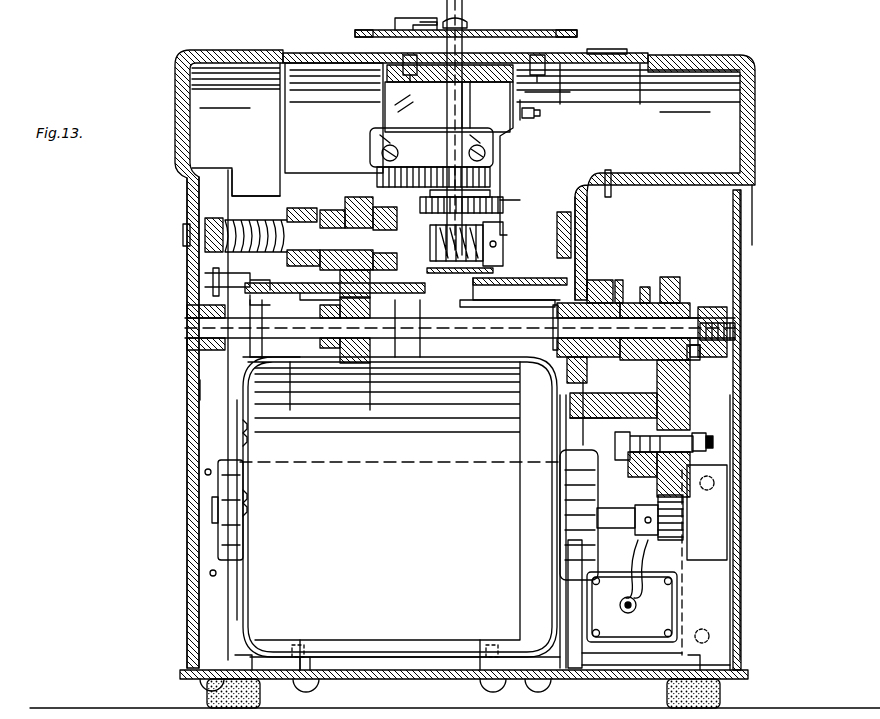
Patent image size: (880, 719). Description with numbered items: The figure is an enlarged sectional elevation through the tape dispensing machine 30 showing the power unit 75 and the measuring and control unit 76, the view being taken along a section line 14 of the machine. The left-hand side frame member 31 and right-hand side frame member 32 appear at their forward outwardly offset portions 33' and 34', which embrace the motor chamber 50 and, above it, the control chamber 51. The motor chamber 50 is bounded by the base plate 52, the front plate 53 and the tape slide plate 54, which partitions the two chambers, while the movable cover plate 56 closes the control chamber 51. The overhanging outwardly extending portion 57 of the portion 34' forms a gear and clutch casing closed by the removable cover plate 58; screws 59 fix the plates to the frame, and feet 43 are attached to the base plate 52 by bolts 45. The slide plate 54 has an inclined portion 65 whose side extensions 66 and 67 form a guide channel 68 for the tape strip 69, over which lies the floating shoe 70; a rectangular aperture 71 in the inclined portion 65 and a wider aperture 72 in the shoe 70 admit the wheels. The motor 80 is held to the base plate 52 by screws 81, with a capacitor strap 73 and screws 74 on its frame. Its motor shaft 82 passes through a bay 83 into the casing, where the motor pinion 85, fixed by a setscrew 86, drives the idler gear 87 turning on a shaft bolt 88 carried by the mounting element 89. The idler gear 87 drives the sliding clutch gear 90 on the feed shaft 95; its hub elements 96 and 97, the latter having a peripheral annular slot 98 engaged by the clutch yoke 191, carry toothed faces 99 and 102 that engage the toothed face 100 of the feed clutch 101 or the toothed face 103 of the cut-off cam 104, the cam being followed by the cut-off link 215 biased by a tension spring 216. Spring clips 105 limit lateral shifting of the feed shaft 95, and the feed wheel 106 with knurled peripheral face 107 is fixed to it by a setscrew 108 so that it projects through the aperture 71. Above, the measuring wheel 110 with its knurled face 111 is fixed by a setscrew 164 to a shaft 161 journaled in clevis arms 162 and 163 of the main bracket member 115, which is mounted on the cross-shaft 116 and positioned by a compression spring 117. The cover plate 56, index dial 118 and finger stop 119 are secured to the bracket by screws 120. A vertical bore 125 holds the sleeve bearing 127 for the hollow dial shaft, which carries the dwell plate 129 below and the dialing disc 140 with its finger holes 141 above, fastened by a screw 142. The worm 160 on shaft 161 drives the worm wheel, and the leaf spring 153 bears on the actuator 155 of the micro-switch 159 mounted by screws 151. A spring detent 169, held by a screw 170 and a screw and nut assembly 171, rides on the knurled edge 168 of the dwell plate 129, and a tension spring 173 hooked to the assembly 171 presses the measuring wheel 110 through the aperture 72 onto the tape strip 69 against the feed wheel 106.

The tape dispensing machine 30 is at (117, 429).
The left-hand side frame member 31 is at (177, 47).
The right-hand side frame member 32 is at (725, 53).
The forward outwardly offset portion 33' is at (158, 369).
The forward outwardly offset portion 34' is at (517, 372).
The foot 43 is at (262, 692).
The bolt 45 is at (248, 652).
The motor chamber 50 is at (226, 600).
The control chamber 51 is at (255, 182).
The base plate 52 is at (410, 680).
The front plate 53 is at (240, 622).
The tape slide plate 54 is at (470, 306).
The movable cover plate 56 is at (292, 52).
The overhanging outwardly extending portion 57 is at (740, 232).
The removable cover plate 58 is at (742, 400).
The screw 59 is at (205, 475).
The inclined portion 65 is at (262, 360).
The side extension 66 is at (205, 285).
The side extension 67 is at (520, 288).
The guide channel 68 is at (222, 270).
The tape strip 69 is at (412, 340).
The floating shoe 70 is at (270, 300).
The rectangular aperture 71 is at (372, 335).
The aperture 72 is at (330, 300).
The strap 73 is at (280, 483).
The screw 74 is at (240, 428).
The power unit 75 is at (718, 428).
The measuring and control unit 76 is at (546, 153).
The motor 80 is at (378, 630).
The screw 81 is at (312, 691).
The motor shaft 82 is at (630, 508).
The bay 83 is at (548, 450).
The motor pinion 85 is at (686, 533).
The setscrew 86 is at (652, 515).
The idler gear 87 is at (692, 424).
The shaft bolt 88 is at (715, 444).
The mounting element 89 is at (640, 443).
The sliding clutch gear 90 is at (672, 277).
The feed shaft 95 is at (680, 318).
The hub element 96 is at (690, 362).
The hub element 97 is at (657, 355).
The peripheral annular slot 98 is at (645, 285).
The toothed face 99 is at (700, 358).
The toothed face 100 is at (728, 310).
The feed clutch 101 is at (735, 318).
The toothed face 102 is at (570, 358).
The toothed face 103 is at (620, 280).
The cut-off cam 104 is at (558, 400).
The spring clip 105 is at (187, 303).
The feed wheel 106 is at (396, 375).
The knurled peripheral face 107 is at (345, 385).
The setscrew 108 is at (330, 352).
The measuring wheel 110 is at (345, 205).
The knurled face 111 is at (378, 208).
The main bracket member 115 is at (548, 92).
The cross-shaft 116 is at (183, 237).
The compression spring 117 is at (225, 250).
The index dial 118 is at (610, 48).
The finger stop 119 is at (400, 18).
The screw 120 is at (395, 70).
The vertical bore 125 is at (440, 95).
The sleeve bearing 127 is at (470, 88).
The dwell plate 129 is at (510, 170).
The dialing disc 140 is at (354, 33).
The finger hole 141 is at (356, 31).
The screw 142 is at (440, 21).
The shaft 14 is at (447, 11).
The screw 151 is at (400, 150).
The leaf spring 153 is at (480, 288).
The actuator 155 is at (433, 177).
The micro-switch 159 is at (382, 128).
The worm 160 is at (485, 262).
The shaft 161 is at (375, 285).
The clevis arm 162 is at (320, 212).
The clevis arm 163 is at (468, 154).
The setscrew 164 is at (380, 286).
The knurled edge 168 is at (503, 208).
The spring detent 169 is at (492, 194).
The screw 170 is at (585, 52).
The screw and nut assembly 171 is at (542, 112).
The tension spring 173 is at (540, 118).
The clutch yoke 191 is at (668, 277).
The cut-off link 215 is at (600, 245).
The tension spring 216 is at (612, 170).